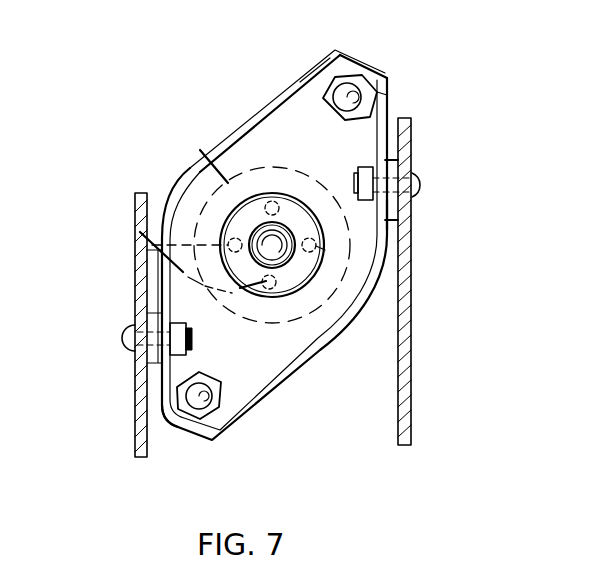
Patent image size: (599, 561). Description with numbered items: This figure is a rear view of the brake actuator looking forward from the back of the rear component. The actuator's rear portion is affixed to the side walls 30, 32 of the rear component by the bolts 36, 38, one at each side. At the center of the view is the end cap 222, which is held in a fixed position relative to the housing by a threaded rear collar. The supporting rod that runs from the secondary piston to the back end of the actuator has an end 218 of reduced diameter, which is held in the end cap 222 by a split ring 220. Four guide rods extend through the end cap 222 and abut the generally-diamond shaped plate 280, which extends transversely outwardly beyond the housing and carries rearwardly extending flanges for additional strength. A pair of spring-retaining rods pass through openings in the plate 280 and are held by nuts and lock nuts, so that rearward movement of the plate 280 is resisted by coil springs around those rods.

The side wall 30 is at (135, 382).
The side wall 32 is at (410, 403).
The bolt 36 is at (420, 190).
The bolt 38 is at (118, 338).
The end of reduced diameter 218 is at (310, 282).
The split ring 220 is at (275, 247).
The end cap 222 is at (197, 148).
The generally-diamond shaped plate 280 is at (270, 138).